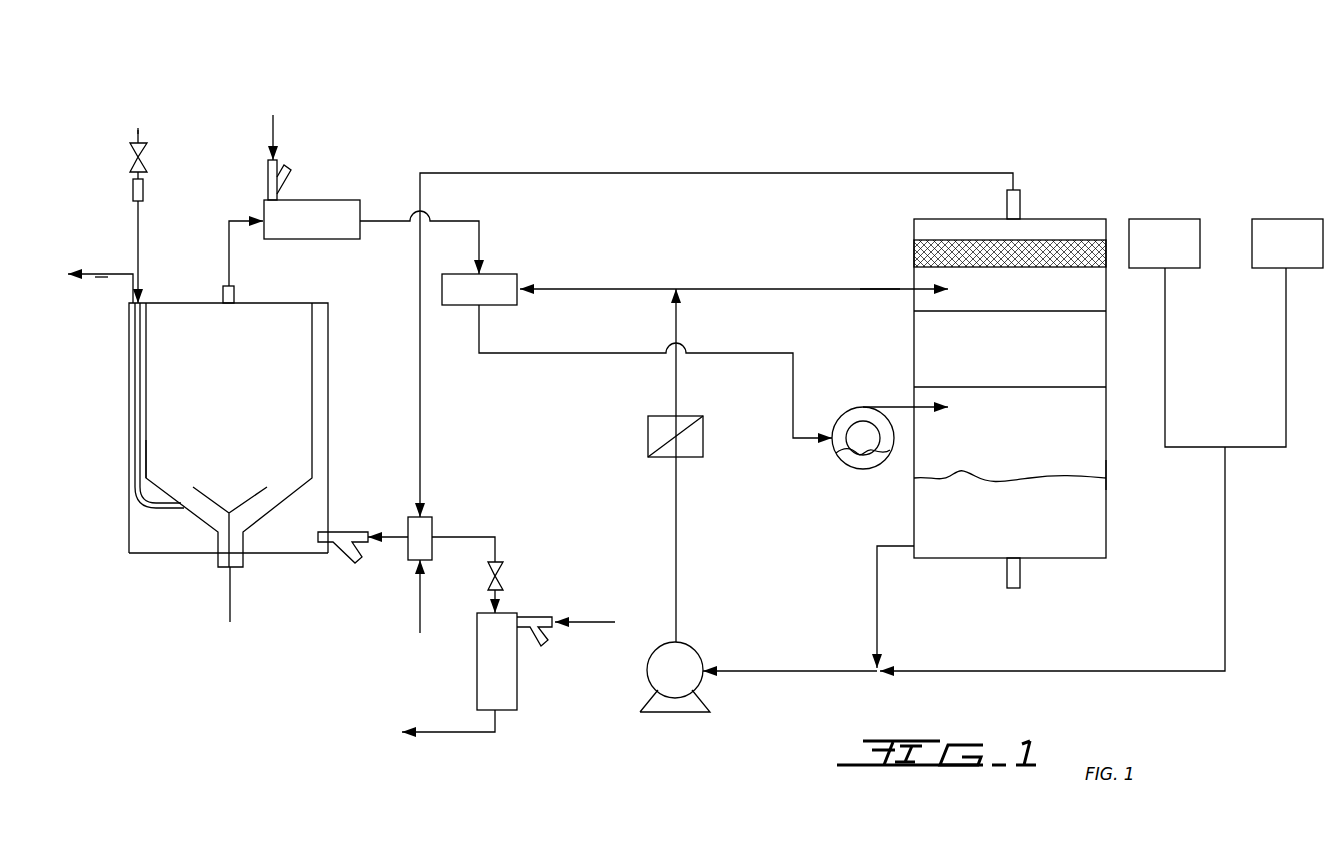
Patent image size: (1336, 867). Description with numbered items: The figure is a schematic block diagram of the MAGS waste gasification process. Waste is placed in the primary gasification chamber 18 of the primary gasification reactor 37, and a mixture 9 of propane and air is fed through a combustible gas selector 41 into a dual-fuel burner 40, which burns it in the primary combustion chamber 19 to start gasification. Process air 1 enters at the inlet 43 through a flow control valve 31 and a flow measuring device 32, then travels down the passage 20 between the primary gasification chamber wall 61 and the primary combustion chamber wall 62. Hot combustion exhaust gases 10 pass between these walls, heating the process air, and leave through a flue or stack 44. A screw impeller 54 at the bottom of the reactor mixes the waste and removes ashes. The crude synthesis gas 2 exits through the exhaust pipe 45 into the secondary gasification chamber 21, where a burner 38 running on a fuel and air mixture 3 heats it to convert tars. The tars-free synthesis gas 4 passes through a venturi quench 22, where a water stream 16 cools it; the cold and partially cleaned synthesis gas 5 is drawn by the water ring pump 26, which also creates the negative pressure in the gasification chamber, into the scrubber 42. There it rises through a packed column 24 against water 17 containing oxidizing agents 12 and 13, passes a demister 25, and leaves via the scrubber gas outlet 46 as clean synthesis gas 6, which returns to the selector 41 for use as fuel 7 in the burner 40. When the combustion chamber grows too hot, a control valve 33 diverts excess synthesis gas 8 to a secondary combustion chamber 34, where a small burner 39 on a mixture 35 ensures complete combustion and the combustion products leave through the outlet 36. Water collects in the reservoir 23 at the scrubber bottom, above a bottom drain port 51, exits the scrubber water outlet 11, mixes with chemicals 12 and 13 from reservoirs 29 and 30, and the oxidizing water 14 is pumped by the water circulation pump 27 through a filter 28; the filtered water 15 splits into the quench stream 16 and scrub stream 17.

The process air 1 is at (146, 216).
The crude synthesis gas 2 is at (246, 253).
The fuel/air mixture 3 is at (272, 145).
The tars-free synthesis gas 4 is at (419, 236).
The cold and partially cleaned synthesis gas 5 is at (655, 371).
The clean and dewatered synthesis gas 6 is at (716, 333).
The fuel 7 is at (388, 525).
The excess synthesis gas 8 is at (463, 538).
The fuel/air mixture 9 is at (411, 596).
The hot combustion exhaust gases 10 is at (100, 277).
The scrubber water outlet 11 is at (895, 593).
The oxidizing agent 12 is at (1195, 357).
The oxidizing agent 13 is at (1268, 357).
The oxidizing water 14 is at (964, 559).
The filtered and oxidizing water 15 is at (689, 465).
The quench water stream 16 is at (734, 277).
The scrub water stream 17 is at (880, 277).
The primary gasification chamber 18 is at (238, 362).
The primary combustion chamber 19 is at (152, 530).
The passage 20 is at (137, 380).
The secondary gasification chamber 21 is at (312, 219).
The venturi quench 22 is at (498, 286).
The reservoir 23 is at (1027, 530).
The packed column 24 is at (1027, 357).
The demister 25 is at (945, 255).
The water ring pump 26 is at (850, 466).
The water circulation pump 27 is at (655, 672).
The filter 28 is at (690, 458).
The reservoir 29 is at (1165, 219).
The reservoir 30 is at (1286, 219).
The flow control valve 31 is at (130, 160).
The flow measuring device 32 is at (145, 190).
The control valve 33 is at (503, 572).
The secondary combustion chamber 34 is at (500, 685).
The fuel/air mixture 35 is at (586, 610).
The outlet line 36 is at (448, 720).
The primary gasification reactor 37 is at (316, 383).
The burner 38 is at (289, 170).
The small burner 39 is at (535, 618).
The dual-fuel burner 40 is at (340, 540).
The combustible gas selector 41 is at (420, 525).
The scrubber 42 is at (1108, 468).
The inlet 43 is at (136, 132).
The flue or stack 44 is at (108, 277).
The exhaust pipe 45 is at (236, 292).
The scrubber gas outlet 46 is at (1020, 193).
The drain port 51 is at (1020, 578).
The screw impeller 54 is at (228, 603).
The primary gasification chamber wall 61 is at (145, 450).
The primary combustion chamber wall 62 is at (330, 318).